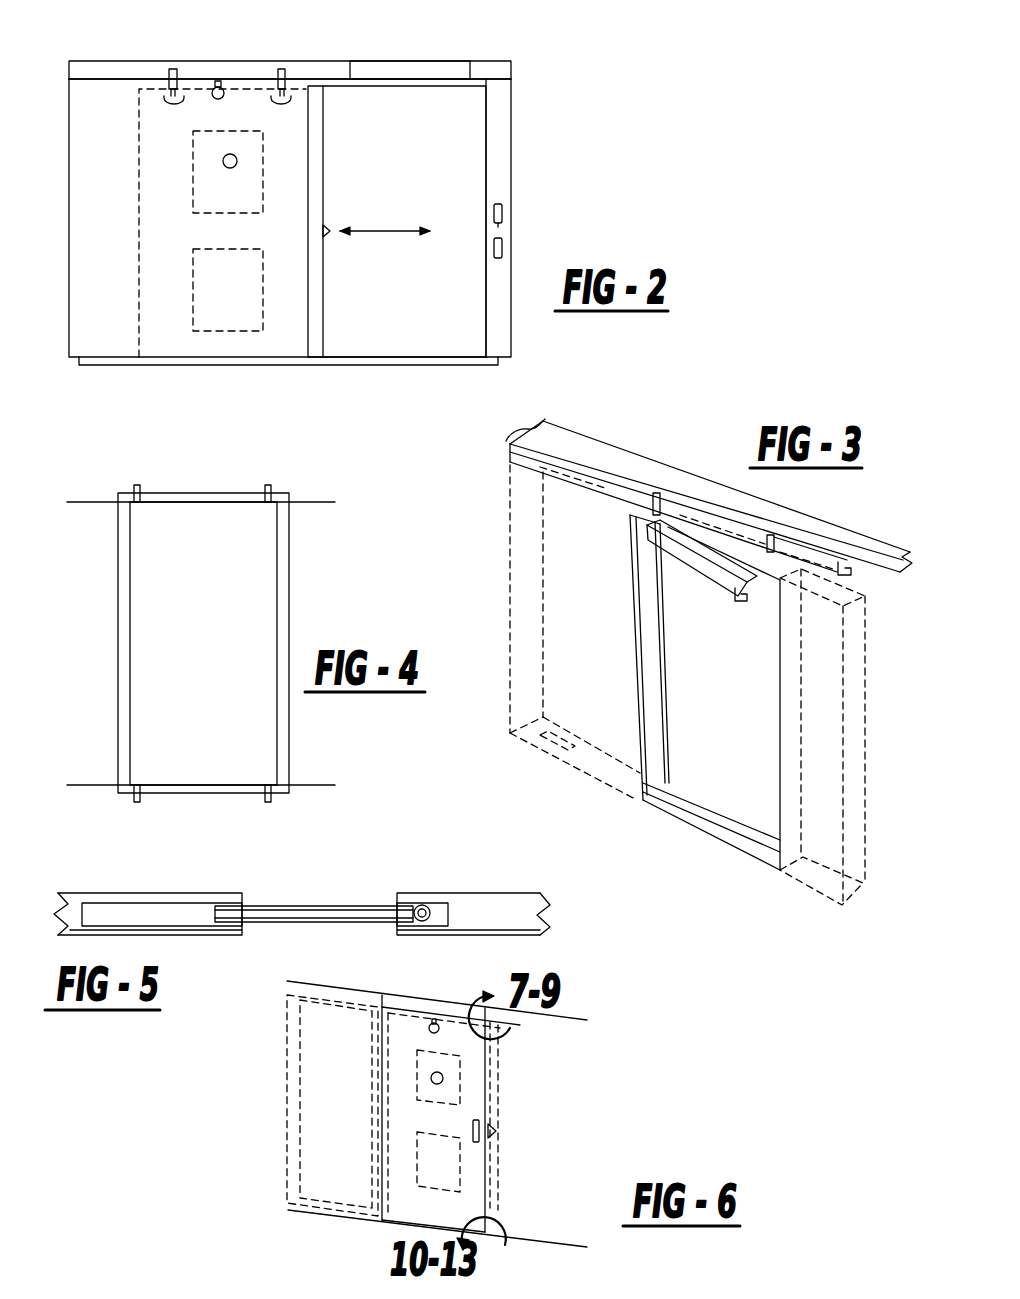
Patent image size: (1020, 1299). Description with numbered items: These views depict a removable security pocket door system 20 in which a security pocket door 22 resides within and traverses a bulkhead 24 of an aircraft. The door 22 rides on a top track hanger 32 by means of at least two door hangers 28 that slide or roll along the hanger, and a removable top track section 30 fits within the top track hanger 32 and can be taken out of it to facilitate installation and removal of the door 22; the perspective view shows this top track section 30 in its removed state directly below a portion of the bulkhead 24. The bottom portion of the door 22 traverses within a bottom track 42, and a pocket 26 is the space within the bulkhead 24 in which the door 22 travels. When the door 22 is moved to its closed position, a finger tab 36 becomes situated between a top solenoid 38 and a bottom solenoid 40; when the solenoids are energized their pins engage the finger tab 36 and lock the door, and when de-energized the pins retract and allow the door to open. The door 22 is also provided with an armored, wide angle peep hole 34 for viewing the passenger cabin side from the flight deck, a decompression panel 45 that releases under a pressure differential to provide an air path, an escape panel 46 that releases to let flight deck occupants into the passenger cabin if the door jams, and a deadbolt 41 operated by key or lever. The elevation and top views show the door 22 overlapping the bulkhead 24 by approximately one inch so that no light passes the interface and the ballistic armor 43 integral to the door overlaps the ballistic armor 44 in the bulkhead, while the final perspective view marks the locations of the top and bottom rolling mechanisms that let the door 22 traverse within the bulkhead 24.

In FIG. 2, the removable security pocket door system 20 is at (535, 62).
In FIG. 6, the removable security pocket door system 20 is at (613, 1075).
In FIG. 2, the security pocket door 22 is at (137, 110).
In FIG. 4, the security pocket door 22 is at (120, 490).
In FIG. 5, the security pocket door 22 is at (306, 906).
In FIG. 6, the security pocket door 22 is at (444, 1176).
In FIG. 2, the bulkhead 24 is at (70, 93).
In FIG. 4, the bulkhead 24 is at (87, 501).
In FIG. 3, the bulkhead 24 is at (601, 438).
In FIG. 5, the bulkhead 24 is at (98, 892).
In FIG. 6, the bulkhead 24 is at (310, 1212).
In FIG. 3, the pocket 26 is at (508, 597).
In FIG. 6, the pocket 26 is at (296, 1079).
In FIG. 2, the door hangers 28 is at (170, 68).
In FIG. 4, the door hangers 28 is at (145, 483).
In FIG. 2, the removable top track section 30 is at (445, 62).
In FIG. 3, the removable top track section 30 is at (705, 515).
In FIG. 2, the top track hanger 32 is at (193, 61).
In FIG. 3, the top track hanger 32 is at (510, 438).
In FIG. 2, the armored wide angle peep hole 34 is at (231, 154).
In FIG. 2, the finger tab 36 is at (325, 232).
In FIG. 6, the finger tab 36 is at (497, 1133).
In FIG. 2, the top solenoid 38 is at (502, 213).
In FIG. 2, the bottom solenoid 40 is at (502, 248).
In FIG. 2, the deadbolt 41 is at (219, 80).
In FIG. 2, the bottom track 42 is at (92, 364).
In FIG. 5, the ballistic armor 43 is at (318, 921).
In FIG. 5, the ballistic armor 44 is at (90, 932).
In FIG. 2, the decompression panel 45 is at (193, 172).
In FIG. 2, the escape panel 46 is at (193, 268).